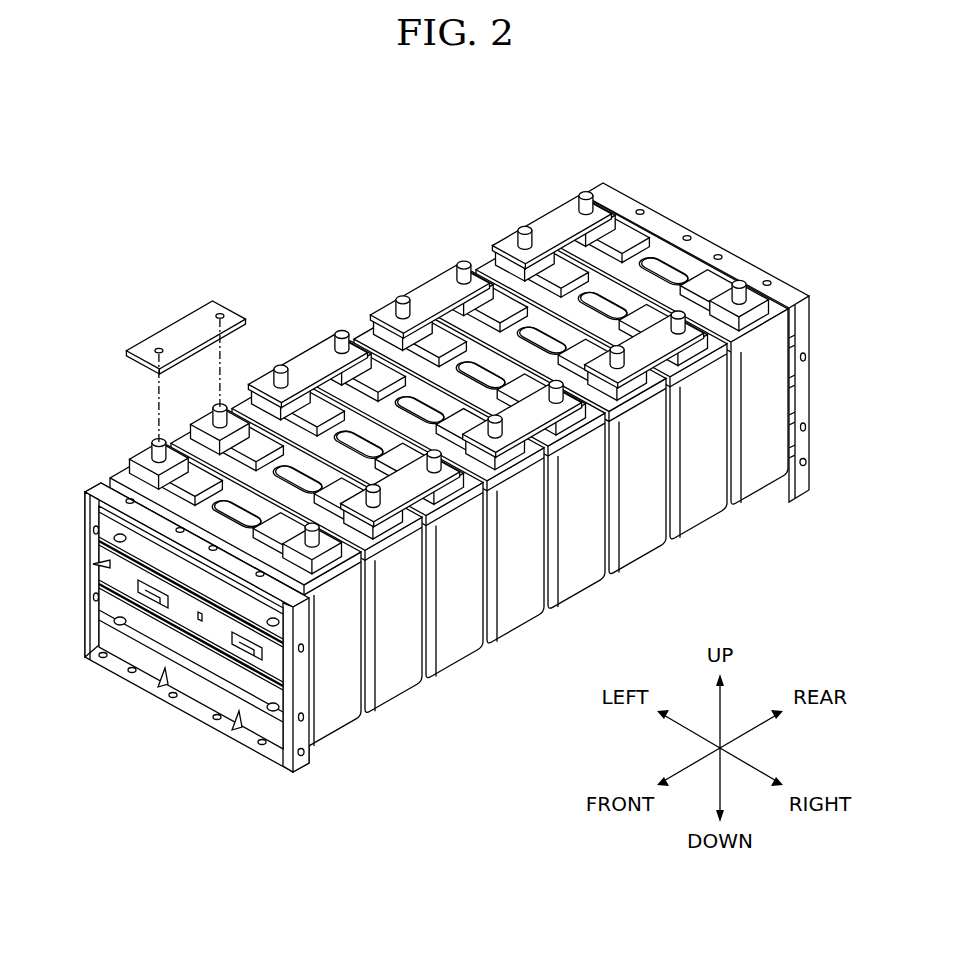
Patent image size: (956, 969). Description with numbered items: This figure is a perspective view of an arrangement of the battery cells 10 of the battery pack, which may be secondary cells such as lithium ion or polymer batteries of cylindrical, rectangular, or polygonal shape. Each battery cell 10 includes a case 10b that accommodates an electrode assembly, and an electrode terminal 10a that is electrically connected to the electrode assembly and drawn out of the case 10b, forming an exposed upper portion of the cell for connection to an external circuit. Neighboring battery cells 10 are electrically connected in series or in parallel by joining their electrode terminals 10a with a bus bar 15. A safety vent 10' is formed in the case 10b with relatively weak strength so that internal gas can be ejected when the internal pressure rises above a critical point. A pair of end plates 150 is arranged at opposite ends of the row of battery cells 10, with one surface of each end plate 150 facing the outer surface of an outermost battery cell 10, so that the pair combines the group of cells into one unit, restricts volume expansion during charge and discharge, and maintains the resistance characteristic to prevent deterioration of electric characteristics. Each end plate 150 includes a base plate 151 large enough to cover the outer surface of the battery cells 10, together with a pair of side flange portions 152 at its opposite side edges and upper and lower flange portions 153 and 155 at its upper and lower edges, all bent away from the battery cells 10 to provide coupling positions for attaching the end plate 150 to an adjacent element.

The battery cell 10 is at (474, 535).
The safety vent 10' is at (662, 264).
The electrode terminal 10a is at (744, 283).
The case 10b is at (751, 497).
The bus bar 15 is at (181, 318).
The end plate 150 is at (716, 234).
The base plate 151 is at (151, 656).
The side flange portion 152 is at (87, 642).
The upper flange portion 153 is at (245, 733).
The lower flange portion 155 is at (106, 489).